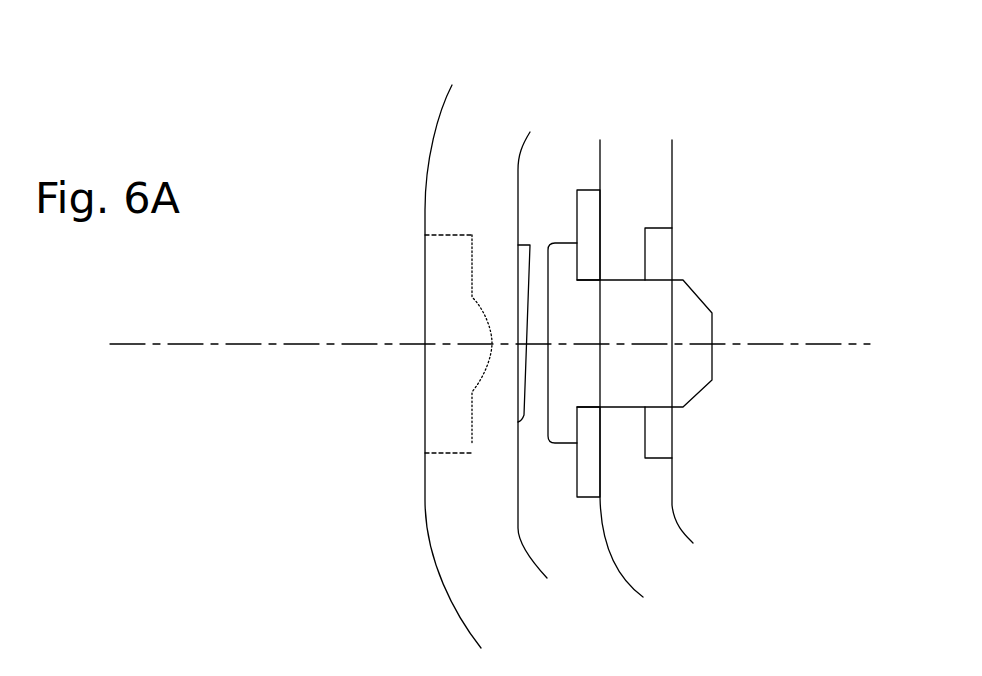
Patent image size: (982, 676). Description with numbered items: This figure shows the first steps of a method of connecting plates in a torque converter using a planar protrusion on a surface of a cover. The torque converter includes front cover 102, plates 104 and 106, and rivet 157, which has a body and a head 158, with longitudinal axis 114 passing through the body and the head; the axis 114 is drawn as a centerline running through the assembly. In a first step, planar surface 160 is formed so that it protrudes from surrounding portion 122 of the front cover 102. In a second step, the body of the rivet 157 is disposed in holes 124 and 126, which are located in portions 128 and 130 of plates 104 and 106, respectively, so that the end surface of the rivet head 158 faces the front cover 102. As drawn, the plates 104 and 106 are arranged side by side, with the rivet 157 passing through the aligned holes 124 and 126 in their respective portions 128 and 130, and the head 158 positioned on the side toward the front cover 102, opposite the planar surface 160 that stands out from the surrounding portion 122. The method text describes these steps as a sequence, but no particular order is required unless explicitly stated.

The front cover 102 is at (426, 103).
The plate 104 is at (588, 190).
The plate 106 is at (673, 208).
The longitudinal axis 114 is at (303, 342).
The surrounding portion 122 is at (517, 482).
The hole 124 is at (590, 407).
The hole 126 is at (627, 407).
The portion 128 is at (585, 267).
The portion 130 is at (622, 257).
The rivet 157 is at (706, 291).
The head 158 is at (562, 428).
The planar surface 160 is at (512, 249).